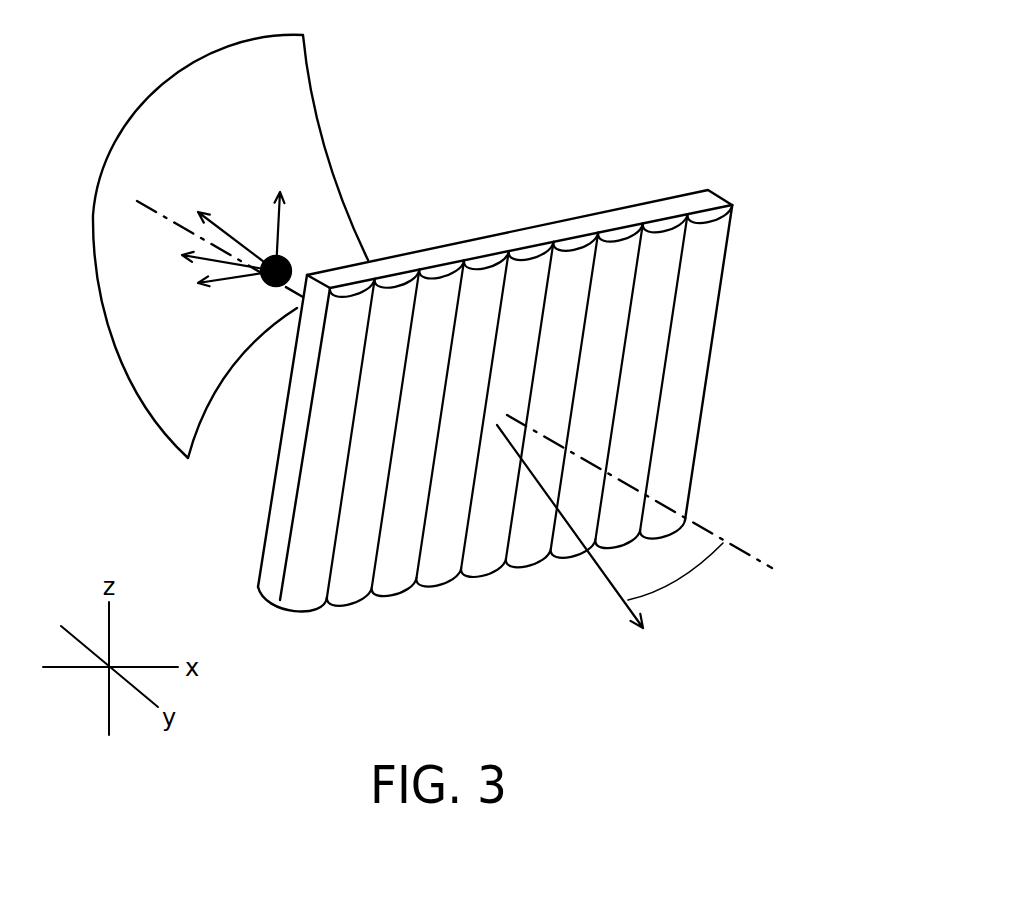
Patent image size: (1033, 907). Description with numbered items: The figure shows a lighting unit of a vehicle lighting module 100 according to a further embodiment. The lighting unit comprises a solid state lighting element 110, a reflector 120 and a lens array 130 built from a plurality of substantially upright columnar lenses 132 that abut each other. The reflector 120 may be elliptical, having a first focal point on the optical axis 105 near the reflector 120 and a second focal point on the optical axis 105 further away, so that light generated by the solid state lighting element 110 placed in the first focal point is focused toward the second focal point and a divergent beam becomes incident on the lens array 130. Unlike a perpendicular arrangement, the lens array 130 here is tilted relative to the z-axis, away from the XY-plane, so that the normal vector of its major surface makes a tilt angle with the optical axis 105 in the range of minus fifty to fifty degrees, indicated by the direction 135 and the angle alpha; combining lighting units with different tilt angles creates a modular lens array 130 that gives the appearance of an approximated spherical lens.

The vehicle lighting module 100 is at (705, 105).
The optical axis 105 is at (753, 553).
The solid state lighting element 110 is at (287, 260).
The reflector 120 is at (290, 107).
The lens array 130 is at (454, 387).
The columnar lenses 132 is at (577, 243).
The tilted direction arrow 135 is at (605, 575).